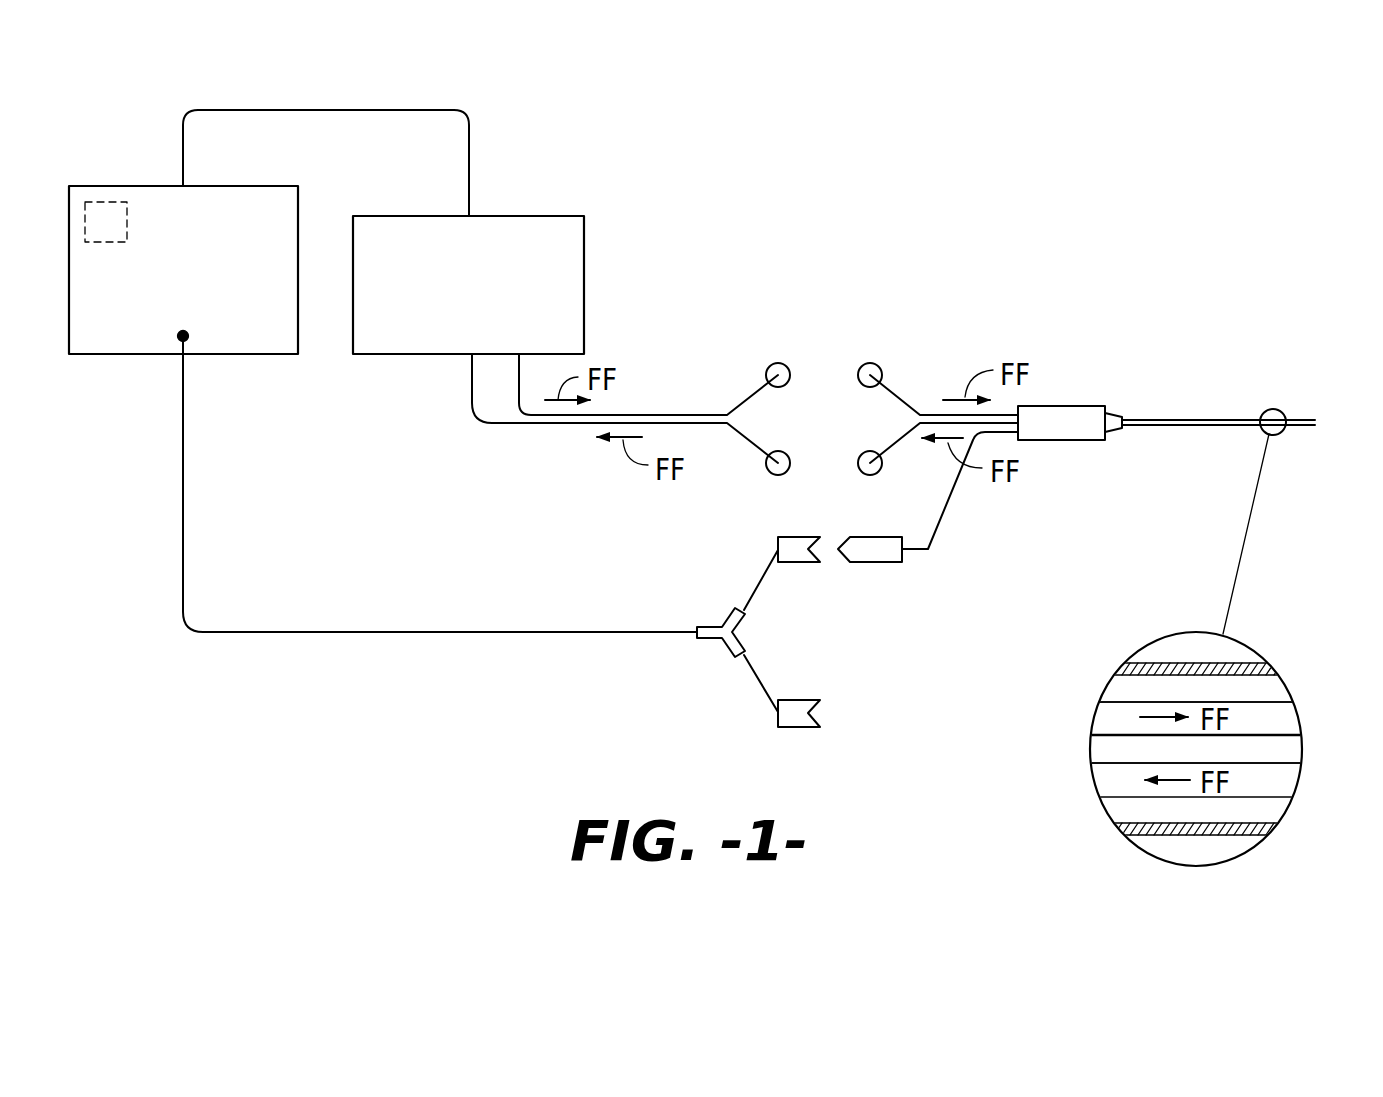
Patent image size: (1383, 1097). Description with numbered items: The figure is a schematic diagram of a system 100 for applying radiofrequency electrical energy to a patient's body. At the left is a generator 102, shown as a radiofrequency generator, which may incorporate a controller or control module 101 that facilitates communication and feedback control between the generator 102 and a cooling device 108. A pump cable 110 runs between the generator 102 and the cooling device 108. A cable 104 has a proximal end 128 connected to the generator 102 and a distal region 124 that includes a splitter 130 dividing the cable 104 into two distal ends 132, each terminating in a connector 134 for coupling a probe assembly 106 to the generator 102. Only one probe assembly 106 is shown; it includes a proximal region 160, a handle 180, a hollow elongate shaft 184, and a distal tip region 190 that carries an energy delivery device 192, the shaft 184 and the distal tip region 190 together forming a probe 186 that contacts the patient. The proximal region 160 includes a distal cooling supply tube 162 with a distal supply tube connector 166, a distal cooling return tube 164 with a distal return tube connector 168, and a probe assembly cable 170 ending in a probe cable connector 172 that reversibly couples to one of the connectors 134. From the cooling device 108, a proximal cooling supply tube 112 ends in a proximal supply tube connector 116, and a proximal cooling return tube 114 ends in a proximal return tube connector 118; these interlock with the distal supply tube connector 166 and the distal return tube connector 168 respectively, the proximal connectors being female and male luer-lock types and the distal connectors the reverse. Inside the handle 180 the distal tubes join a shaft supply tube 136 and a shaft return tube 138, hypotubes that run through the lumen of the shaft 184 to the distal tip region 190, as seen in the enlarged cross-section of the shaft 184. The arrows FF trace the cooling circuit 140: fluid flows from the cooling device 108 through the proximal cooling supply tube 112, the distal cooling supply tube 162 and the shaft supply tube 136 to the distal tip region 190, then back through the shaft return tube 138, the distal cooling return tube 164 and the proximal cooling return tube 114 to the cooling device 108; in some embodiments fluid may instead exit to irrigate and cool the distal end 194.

The system 100 is at (1062, 182).
The controller or control module 101 is at (85, 220).
The generator 102 is at (147, 186).
The cable 104 is at (440, 632).
The probe assembly 106 is at (1082, 514).
The cooling device 108 is at (510, 216).
The pump cable 110 is at (328, 110).
The proximal cooling supply tube 112 is at (625, 412).
The proximal cooling return tube 114 is at (572, 427).
The proximal supply tube connector 116 is at (773, 364).
The proximal return tube connector 118 is at (773, 475).
The distal region of the cable 124 is at (700, 662).
The proximal end of the cable 128 is at (178, 336).
The splitter 130 is at (713, 623).
The distal ends of the cable 132 is at (777, 613).
The connectors 134 is at (802, 700).
The shaft supply tube 136 is at (1278, 700).
The shaft return tube 138 is at (1288, 763).
The cooling circuit 140 is at (658, 320).
The proximal region 160 is at (940, 384).
The distal cooling supply tube 162 is at (897, 393).
The distal cooling return tube 164 is at (897, 443).
The distal supply tube connector 166 is at (870, 362).
The distal return tube connector 168 is at (870, 476).
The probe assembly cable 170 is at (955, 488).
The probe cable connector 172 is at (882, 563).
The handle 180 is at (1077, 406).
The hollow elongate shaft 184 is at (1255, 418).
The probe 186 is at (1196, 432).
The distal tip region 190 is at (1300, 398).
The energy delivery device 192 is at (1307, 430).
The distal end 194 is at (1329, 422).